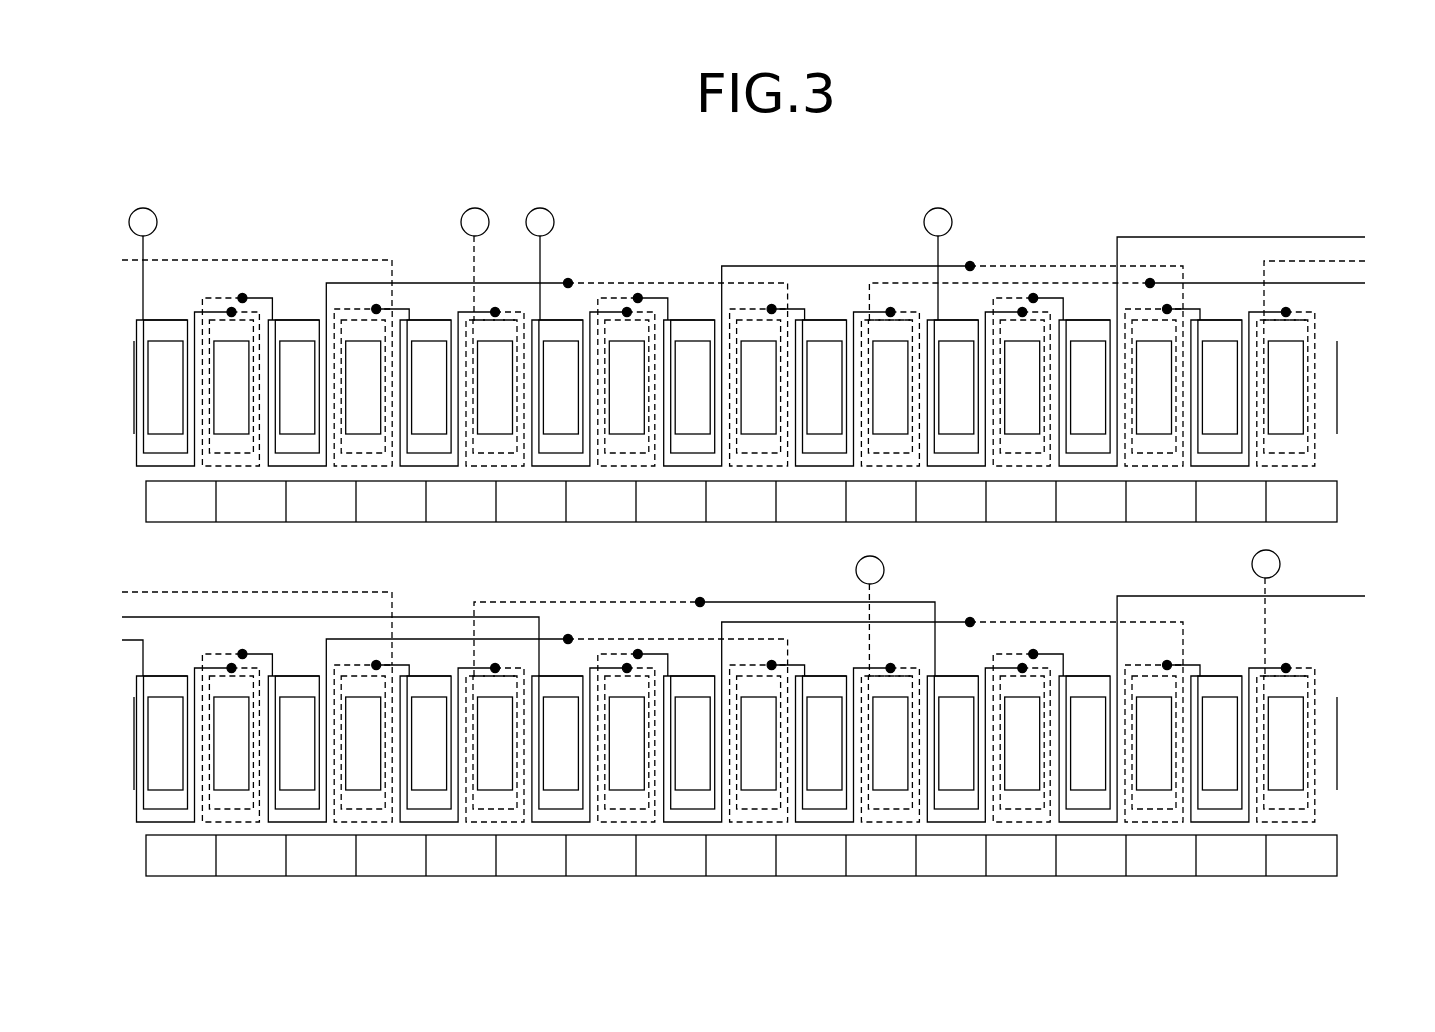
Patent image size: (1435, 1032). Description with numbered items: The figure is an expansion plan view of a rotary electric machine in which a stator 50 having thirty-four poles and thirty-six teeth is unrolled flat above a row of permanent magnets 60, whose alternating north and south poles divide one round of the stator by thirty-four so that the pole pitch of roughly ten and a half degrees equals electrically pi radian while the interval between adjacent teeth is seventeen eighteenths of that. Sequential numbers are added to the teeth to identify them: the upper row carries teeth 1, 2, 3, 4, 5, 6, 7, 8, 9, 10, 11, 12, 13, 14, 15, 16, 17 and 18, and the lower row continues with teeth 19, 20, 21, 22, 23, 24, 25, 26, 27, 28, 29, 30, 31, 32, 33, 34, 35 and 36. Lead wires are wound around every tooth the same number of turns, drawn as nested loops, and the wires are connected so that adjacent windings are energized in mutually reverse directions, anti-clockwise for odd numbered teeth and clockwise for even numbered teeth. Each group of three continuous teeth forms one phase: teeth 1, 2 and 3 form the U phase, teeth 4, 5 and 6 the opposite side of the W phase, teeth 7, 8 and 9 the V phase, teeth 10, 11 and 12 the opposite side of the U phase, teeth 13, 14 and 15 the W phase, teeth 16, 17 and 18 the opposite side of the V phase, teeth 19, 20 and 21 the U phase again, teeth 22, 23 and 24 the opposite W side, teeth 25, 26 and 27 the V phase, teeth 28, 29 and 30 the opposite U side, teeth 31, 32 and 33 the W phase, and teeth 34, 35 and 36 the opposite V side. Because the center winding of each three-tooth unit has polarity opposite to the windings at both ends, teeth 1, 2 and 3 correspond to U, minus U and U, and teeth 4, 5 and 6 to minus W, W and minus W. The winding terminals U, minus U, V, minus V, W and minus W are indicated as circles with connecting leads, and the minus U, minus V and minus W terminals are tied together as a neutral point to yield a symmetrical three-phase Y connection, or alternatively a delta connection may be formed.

The stator 50 is at (766, 473).
The permanent magnets 60 is at (1338, 498).
The tooth number 1 is at (187, 387).
The tooth number 2 is at (237, 380).
The tooth number 3 is at (527, 373).
The tooth number 4 is at (371, 386).
The tooth number 5 is at (450, 387).
The tooth number 6 is at (495, 389).
The tooth number 7 is at (582, 387).
The tooth number 8 is at (633, 380).
The tooth number 9 is at (923, 364).
The tooth number 10 is at (767, 386).
The tooth number 11 is at (846, 387).
The tooth number 12 is at (1124, 368).
The tooth number 13 is at (977, 387).
The tooth number 14 is at (1028, 380).
The tooth number 15 is at (1223, 345).
The tooth number 16 is at (1162, 386).
The tooth number 17 is at (1241, 387).
The tooth number 18 is at (1322, 357).
The tooth number 19 is at (187, 743).
The tooth number 20 is at (237, 736).
The tooth number 21 is at (527, 729).
The tooth number 22 is at (371, 742).
The tooth number 23 is at (450, 743).
The tooth number 24 is at (700, 710).
The tooth number 25 is at (582, 743).
The tooth number 26 is at (633, 736).
The tooth number 27 is at (923, 720).
The tooth number 28 is at (767, 742).
The tooth number 29 is at (846, 743).
The tooth number 30 is at (871, 689).
The tooth number 31 is at (977, 743).
The tooth number 32 is at (1028, 736).
The tooth number 33 is at (1224, 703).
The tooth number 34 is at (1162, 742).
The tooth number 35 is at (1241, 743).
The tooth number 36 is at (1267, 686).